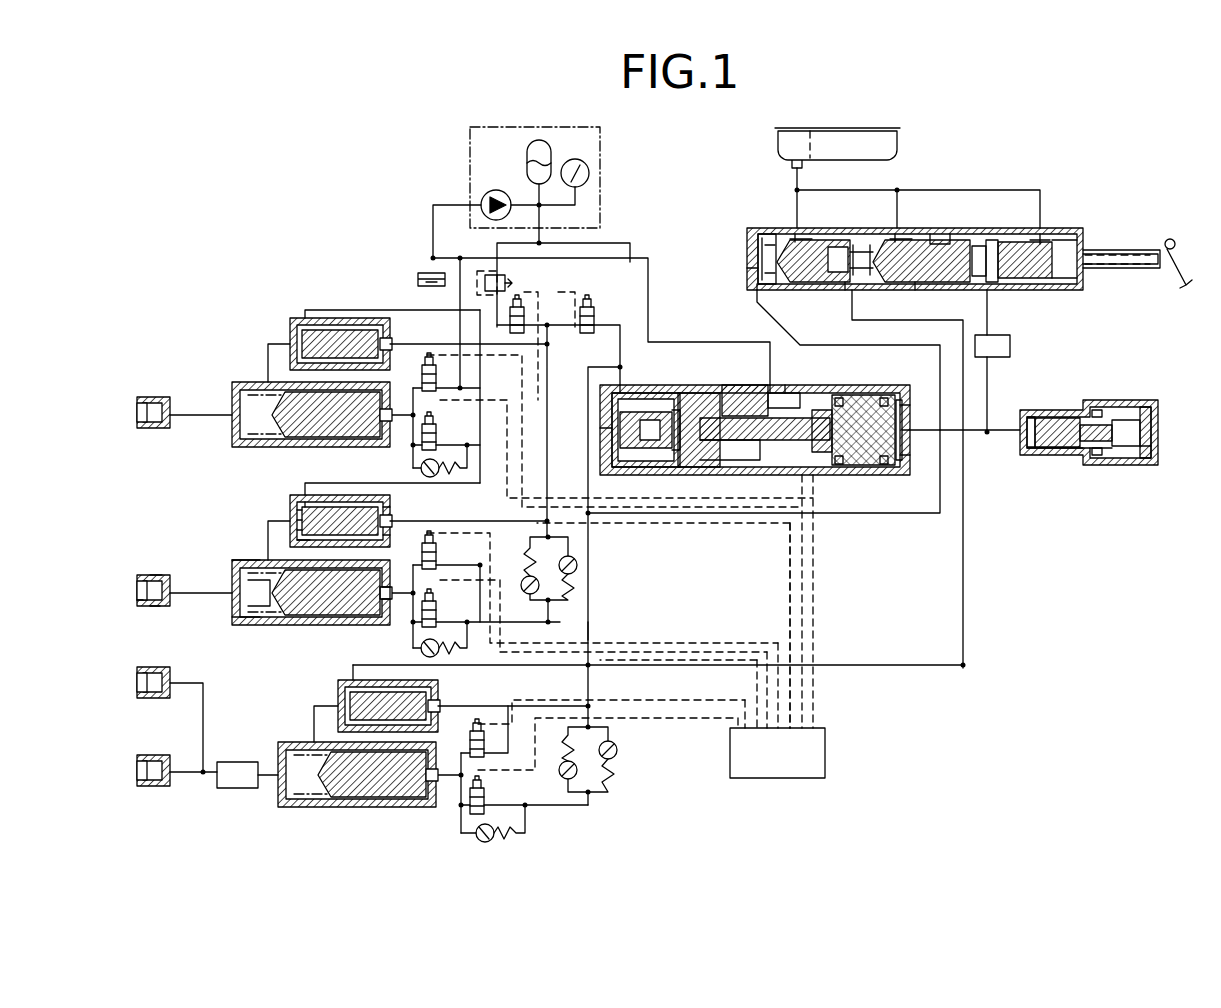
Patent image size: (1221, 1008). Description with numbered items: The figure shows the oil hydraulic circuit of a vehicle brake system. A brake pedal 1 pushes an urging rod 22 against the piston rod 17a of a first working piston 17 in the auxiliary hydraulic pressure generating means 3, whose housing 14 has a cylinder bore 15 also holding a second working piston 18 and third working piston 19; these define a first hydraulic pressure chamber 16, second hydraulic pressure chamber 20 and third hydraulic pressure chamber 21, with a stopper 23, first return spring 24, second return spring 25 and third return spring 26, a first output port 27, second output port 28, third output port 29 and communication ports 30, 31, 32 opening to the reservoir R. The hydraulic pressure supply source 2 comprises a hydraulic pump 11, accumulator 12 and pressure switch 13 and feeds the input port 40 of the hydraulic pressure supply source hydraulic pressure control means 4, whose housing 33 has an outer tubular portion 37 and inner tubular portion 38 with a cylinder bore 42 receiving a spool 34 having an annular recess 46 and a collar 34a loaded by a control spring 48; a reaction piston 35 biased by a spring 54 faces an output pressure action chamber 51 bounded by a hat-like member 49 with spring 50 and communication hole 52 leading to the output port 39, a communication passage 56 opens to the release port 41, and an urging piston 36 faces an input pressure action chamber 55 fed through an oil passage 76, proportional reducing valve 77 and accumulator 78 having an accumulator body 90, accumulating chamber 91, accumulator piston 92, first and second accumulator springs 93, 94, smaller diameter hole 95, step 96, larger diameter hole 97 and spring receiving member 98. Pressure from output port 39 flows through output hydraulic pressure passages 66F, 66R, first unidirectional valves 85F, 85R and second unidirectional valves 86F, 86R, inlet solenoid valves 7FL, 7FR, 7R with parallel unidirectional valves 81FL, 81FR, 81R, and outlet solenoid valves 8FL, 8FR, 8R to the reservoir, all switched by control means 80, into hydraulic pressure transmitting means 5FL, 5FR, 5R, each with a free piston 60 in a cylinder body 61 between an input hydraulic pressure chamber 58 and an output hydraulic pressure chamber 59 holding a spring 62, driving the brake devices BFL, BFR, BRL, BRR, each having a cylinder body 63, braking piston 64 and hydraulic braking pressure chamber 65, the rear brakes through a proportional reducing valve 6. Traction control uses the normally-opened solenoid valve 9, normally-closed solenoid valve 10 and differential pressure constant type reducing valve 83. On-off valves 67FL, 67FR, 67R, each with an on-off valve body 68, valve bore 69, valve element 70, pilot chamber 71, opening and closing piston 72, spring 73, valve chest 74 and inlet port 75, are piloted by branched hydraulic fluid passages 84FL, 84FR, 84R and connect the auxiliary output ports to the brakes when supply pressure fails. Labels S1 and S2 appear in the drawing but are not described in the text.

The brake pedal 1 is at (1188, 288).
The hydraulic pressure supply source 2 is at (609, 194).
The auxiliary hydraulic pressure generating means 3 is at (1028, 292).
The hydraulic pressure supply source hydraulic pressure control means 4 is at (790, 385).
The hydraulic pressure transmitting means 5FR is at (232, 378).
The hydraulic pressure transmitting means 5FL is at (269, 637).
The hydraulic pressure transmitting means 5R is at (274, 736).
The proportional reducing valve 6 is at (236, 788).
The inlet solenoid valve 7FR is at (438, 442).
The inlet solenoid valve 7FL is at (438, 616).
The inlet solenoid valve 7R is at (486, 802).
The outlet solenoid valve 8FR is at (422, 370).
The outlet solenoid valve 8FL is at (438, 560).
The outlet solenoid valve 8R is at (470, 740).
The traction-controlling normally-opened solenoid valve 9 is at (594, 305).
The traction-controlling normally-closed solenoid valve 10 is at (530, 302).
The hydraulic pump 11 is at (501, 194).
The accumulator 12 is at (546, 152).
The pressure switch 13 is at (568, 182).
The housing 14 is at (942, 236).
The cylinder bore 15 is at (925, 290).
The first hydraulic pressure chamber 16 is at (995, 238).
The first working piston 17 is at (1058, 292).
The piston rod 17a is at (1098, 248).
The second working piston 18 is at (921, 261).
The third working piston 19 is at (813, 261).
The second hydraulic pressure chamber 20 is at (858, 240).
The third hydraulic pressure chamber 21 is at (770, 236).
The urging rod 22 is at (1125, 268).
The stopper 23 is at (1025, 260).
The first return spring 24 is at (980, 236).
The second return spring 25 is at (862, 290).
The third return spring 26 is at (747, 280).
The first output port 27 is at (985, 290).
The second output port 28 is at (848, 288).
The third output port 29 is at (755, 292).
The communication port 30 is at (1040, 234).
The communication port 31 is at (898, 236).
The communication port 32 is at (800, 236).
The housing 33 is at (840, 505).
The spool 34 is at (762, 468).
The collar 34a is at (840, 398).
The reaction piston 35 is at (692, 393).
The urging piston 36 is at (884, 398).
The outer tubular portion 37 is at (806, 490).
The inner tubular portion 38 is at (816, 480).
The output port 39 is at (622, 388).
The input port 40 is at (738, 385).
The release port 41 is at (778, 385).
The cylinder bore 42 is at (715, 468).
The annular recess 46 is at (770, 393).
The control spring 48 is at (820, 410).
The hat-like member 49 is at (655, 468).
The spring 50 is at (640, 468).
The output pressure action chamber 51 is at (600, 420).
The communication hole 52 is at (612, 470).
The spring 54 is at (686, 468).
The input pressure action chamber 55 is at (905, 412).
The communication passage 56 is at (863, 430).
The input hydraulic pressure chamber 58 is at (382, 618).
The output hydraulic pressure chamber 59 is at (261, 593).
The free piston 60 is at (326, 592).
The cylinder body 61 is at (232, 562).
The spring 62 is at (234, 620).
The cylinder body 63 is at (158, 575).
The braking piston 64 is at (138, 604).
The hydraulic braking pressure chamber 65 is at (155, 607).
The output hydraulic pressure passage 66F is at (569, 622).
The output hydraulic pressure passage 66R is at (590, 622).
The on-off valve 67FR is at (292, 318).
The on-off valve 67FL is at (280, 492).
The on-off valve 67R is at (329, 692).
The on-off valve body 68 is at (298, 538).
The valve bore 69 is at (298, 518).
The valve element 70 is at (297, 508).
The pilot chamber 71 is at (386, 512).
The opening and closing piston 72 is at (386, 534).
The spring 73 is at (322, 507).
The valve chest 74 is at (298, 530).
The inlet port 75 is at (305, 500).
The oil passage 76 is at (988, 380).
The proportional reducing valve 77 is at (1010, 345).
The accumulator 78 is at (1048, 458).
The control means 80 is at (785, 766).
The hydraulic pressure releasing unidirectional valve 81FR is at (421, 468).
The hydraulic pressure releasing unidirectional valve 81FL is at (421, 650).
The hydraulic pressure releasing unidirectional valve 81R is at (486, 842).
The differential pressure constant type reducing valve 83 is at (506, 283).
The branched hydraulic fluid passage 84FR is at (420, 310).
The branched hydraulic fluid passage 84FL is at (432, 484).
The branched hydraulic fluid passage 84R is at (450, 668).
The first unidirectional valve 85F is at (576, 560).
The first unidirectional valve 85R is at (616, 756).
The second unidirectional valve 86F is at (532, 596).
The second unidirectional valve 86R is at (560, 776).
The accumulator body 90 is at (1095, 460).
The accumulating chamber 91 is at (1022, 445).
The accumulator piston 92 is at (1060, 416).
The first accumulator spring 93 is at (1108, 444).
The second accumulator spring 94 is at (1146, 406).
The smaller diameter hole 95 is at (1035, 416).
The step 96 is at (1096, 408).
The larger diameter hole 97 is at (1118, 420).
The spring receiving member 98 is at (1145, 460).
The reservoir R is at (418, 274).
The switch S1 is at (904, 455).
The switch S2 is at (1028, 458).
The right front wheel brake device BFR is at (128, 393).
The left front wheel brake device BFL is at (128, 571).
The left rear wheel brake device BRL is at (129, 667).
The right rear wheel brake device BRR is at (128, 756).